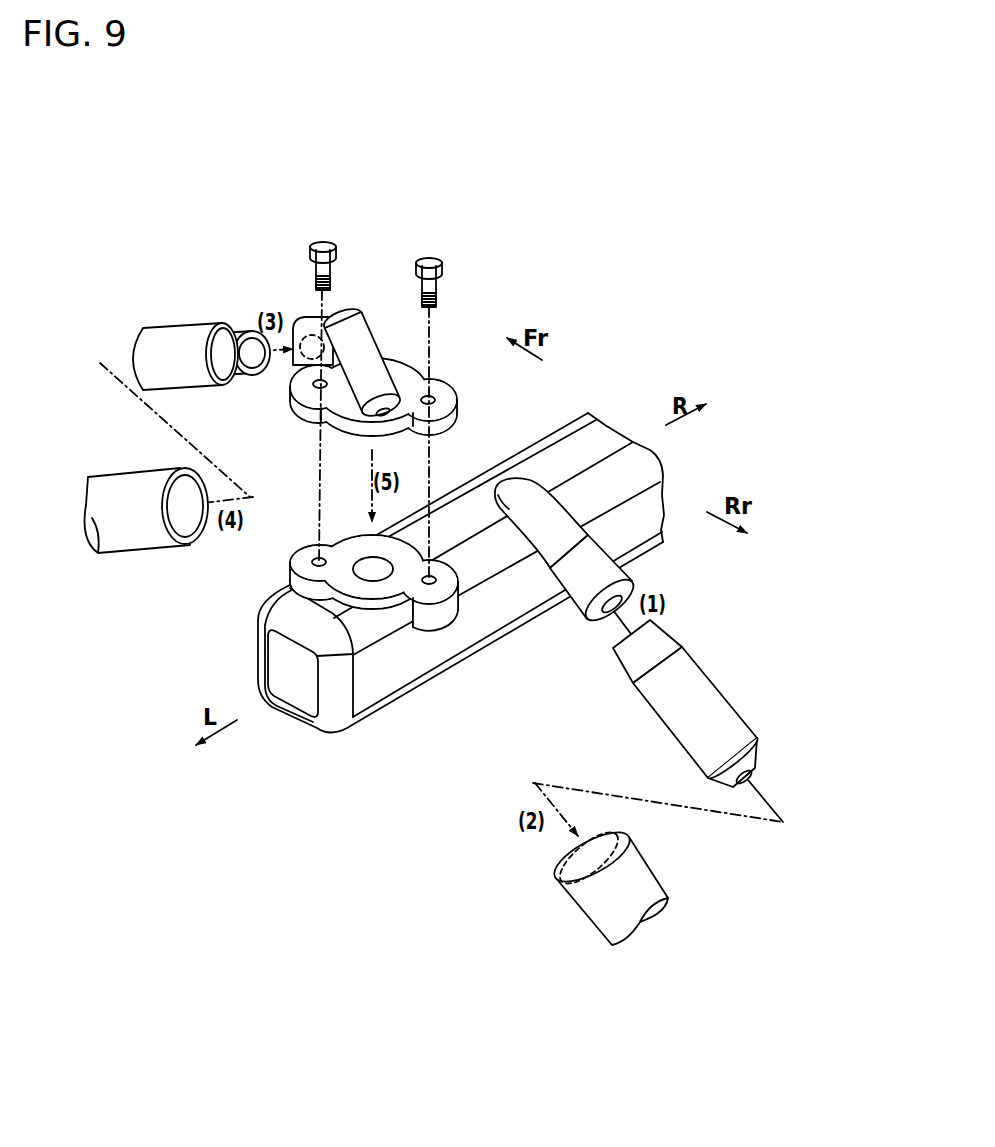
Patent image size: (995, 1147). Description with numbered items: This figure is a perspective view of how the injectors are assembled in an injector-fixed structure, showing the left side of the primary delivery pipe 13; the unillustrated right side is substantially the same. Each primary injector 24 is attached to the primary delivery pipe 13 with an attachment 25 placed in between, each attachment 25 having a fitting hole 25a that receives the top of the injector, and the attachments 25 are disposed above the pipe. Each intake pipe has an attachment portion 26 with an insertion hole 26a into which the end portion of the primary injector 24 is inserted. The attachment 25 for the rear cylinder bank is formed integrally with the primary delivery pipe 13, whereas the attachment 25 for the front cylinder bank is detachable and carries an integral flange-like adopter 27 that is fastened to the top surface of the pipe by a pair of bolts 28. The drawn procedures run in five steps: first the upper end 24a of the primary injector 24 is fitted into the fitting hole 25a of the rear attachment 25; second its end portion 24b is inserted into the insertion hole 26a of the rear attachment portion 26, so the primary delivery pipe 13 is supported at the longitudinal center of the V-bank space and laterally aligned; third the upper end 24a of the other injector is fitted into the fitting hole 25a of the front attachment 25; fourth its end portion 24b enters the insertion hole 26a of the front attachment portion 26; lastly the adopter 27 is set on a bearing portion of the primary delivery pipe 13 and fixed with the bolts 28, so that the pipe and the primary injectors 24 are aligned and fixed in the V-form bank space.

The primary delivery pipe 13 is at (607, 442).
The primary injector 24 is at (190, 327).
The upper end 24a is at (253, 385).
The end portion 24b is at (133, 342).
The attachment 25 is at (355, 314).
The fitting hole 25a is at (300, 317).
The attachment portion 26 is at (140, 555).
The insertion hole 26a is at (200, 545).
The adopter 27 is at (462, 410).
The bolts 28 is at (326, 243).